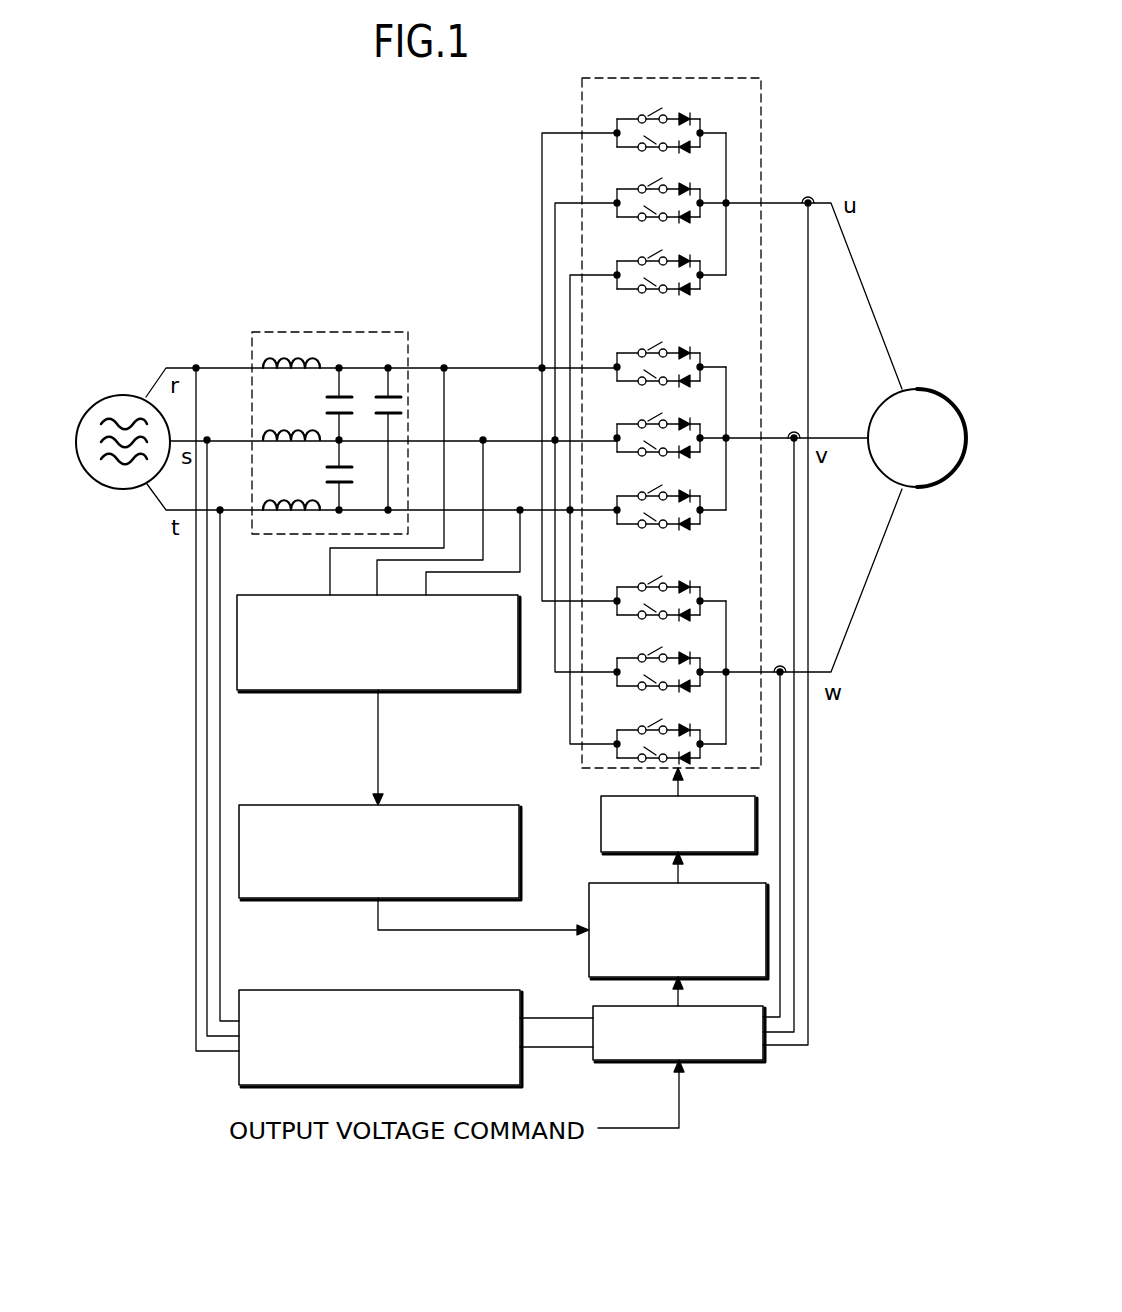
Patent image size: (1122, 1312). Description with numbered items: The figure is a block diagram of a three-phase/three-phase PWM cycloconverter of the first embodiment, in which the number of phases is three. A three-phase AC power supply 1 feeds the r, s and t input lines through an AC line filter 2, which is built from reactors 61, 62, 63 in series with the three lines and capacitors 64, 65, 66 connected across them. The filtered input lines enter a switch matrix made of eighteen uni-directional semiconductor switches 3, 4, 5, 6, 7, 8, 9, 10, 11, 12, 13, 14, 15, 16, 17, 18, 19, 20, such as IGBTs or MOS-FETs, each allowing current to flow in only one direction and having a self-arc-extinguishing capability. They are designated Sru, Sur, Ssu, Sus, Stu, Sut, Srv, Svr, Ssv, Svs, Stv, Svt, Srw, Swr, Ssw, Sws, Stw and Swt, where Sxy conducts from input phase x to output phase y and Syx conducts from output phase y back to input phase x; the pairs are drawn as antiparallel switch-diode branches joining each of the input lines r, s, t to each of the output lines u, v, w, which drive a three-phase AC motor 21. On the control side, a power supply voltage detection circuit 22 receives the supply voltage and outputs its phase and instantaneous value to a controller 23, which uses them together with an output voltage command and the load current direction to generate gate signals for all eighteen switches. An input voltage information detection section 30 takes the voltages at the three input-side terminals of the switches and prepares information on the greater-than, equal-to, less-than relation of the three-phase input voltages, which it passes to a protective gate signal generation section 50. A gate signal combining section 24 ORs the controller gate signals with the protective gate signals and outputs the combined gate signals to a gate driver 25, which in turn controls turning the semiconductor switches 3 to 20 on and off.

The three-phase AC power supply 1 is at (122, 394).
The AC line filter 2 is at (328, 331).
The uni-directional semiconductor switch 3 is at (656, 105).
The uni-directional semiconductor switch 4 is at (650, 153).
The uni-directional semiconductor switch 5 is at (663, 179).
The uni-directional semiconductor switch 6 is at (650, 223).
The uni-directional semiconductor switch 7 is at (663, 251).
The uni-directional semiconductor switch 8 is at (650, 295).
The uni-directional semiconductor switch 9 is at (663, 343).
The uni-directional semiconductor switch 10 is at (650, 387).
The uni-directional semiconductor switch 11 is at (663, 414).
The uni-directional semiconductor switch 12 is at (650, 458).
The uni-directional semiconductor switch 13 is at (663, 486).
The uni-directional semiconductor switch 14 is at (650, 530).
The uni-directional semiconductor switch 15 is at (663, 577).
The uni-directional semiconductor switch 16 is at (650, 621).
The uni-directional semiconductor switch 17 is at (663, 648).
The uni-directional semiconductor switch 18 is at (650, 692).
The uni-directional semiconductor switch 19 is at (663, 720).
The uni-directional semiconductor switch 20 is at (650, 766).
The three-phase AC motor 21 is at (915, 389).
The power supply voltage detection circuit 22 is at (322, 990).
The controller 23 is at (593, 1010).
The gate signal combining section 24 is at (589, 898).
The gate driver 25 is at (601, 832).
The input voltage information detection section 30 is at (293, 594).
The protective gate signal generation section 50 is at (314, 805).
The reactor 61 is at (288, 358).
The reactor 62 is at (272, 432).
The reactor 63 is at (272, 504).
The capacitor 64 is at (330, 406).
The capacitor 65 is at (330, 476).
The capacitor 66 is at (378, 393).